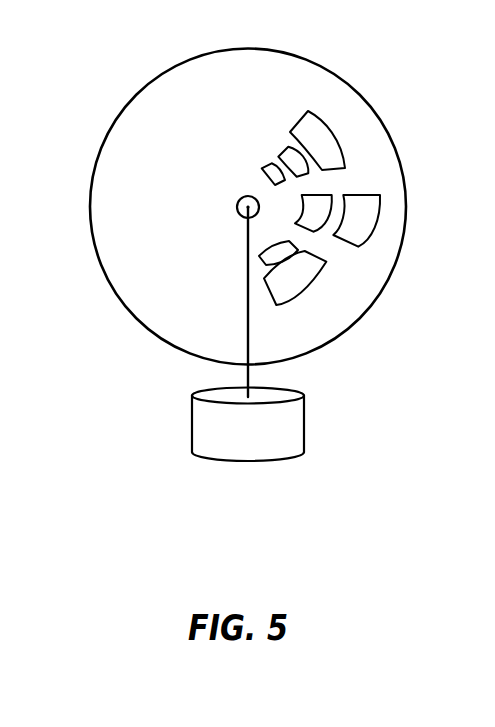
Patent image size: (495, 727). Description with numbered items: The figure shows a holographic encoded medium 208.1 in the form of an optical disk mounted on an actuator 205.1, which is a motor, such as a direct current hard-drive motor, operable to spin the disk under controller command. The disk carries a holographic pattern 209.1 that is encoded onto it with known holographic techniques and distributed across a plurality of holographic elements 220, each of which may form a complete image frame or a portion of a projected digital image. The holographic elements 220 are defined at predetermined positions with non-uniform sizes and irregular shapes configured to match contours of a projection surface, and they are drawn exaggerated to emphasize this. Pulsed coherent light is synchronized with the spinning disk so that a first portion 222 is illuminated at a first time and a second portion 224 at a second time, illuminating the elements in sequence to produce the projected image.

The holographic encoded medium 208.1 is at (130, 312).
The actuator 205.1 is at (304, 415).
The holographic elements 220 is at (283, 84).
The holographic pattern 209.1 is at (375, 141).
The first portion 222 is at (264, 168).
The second portion 224 is at (312, 282).